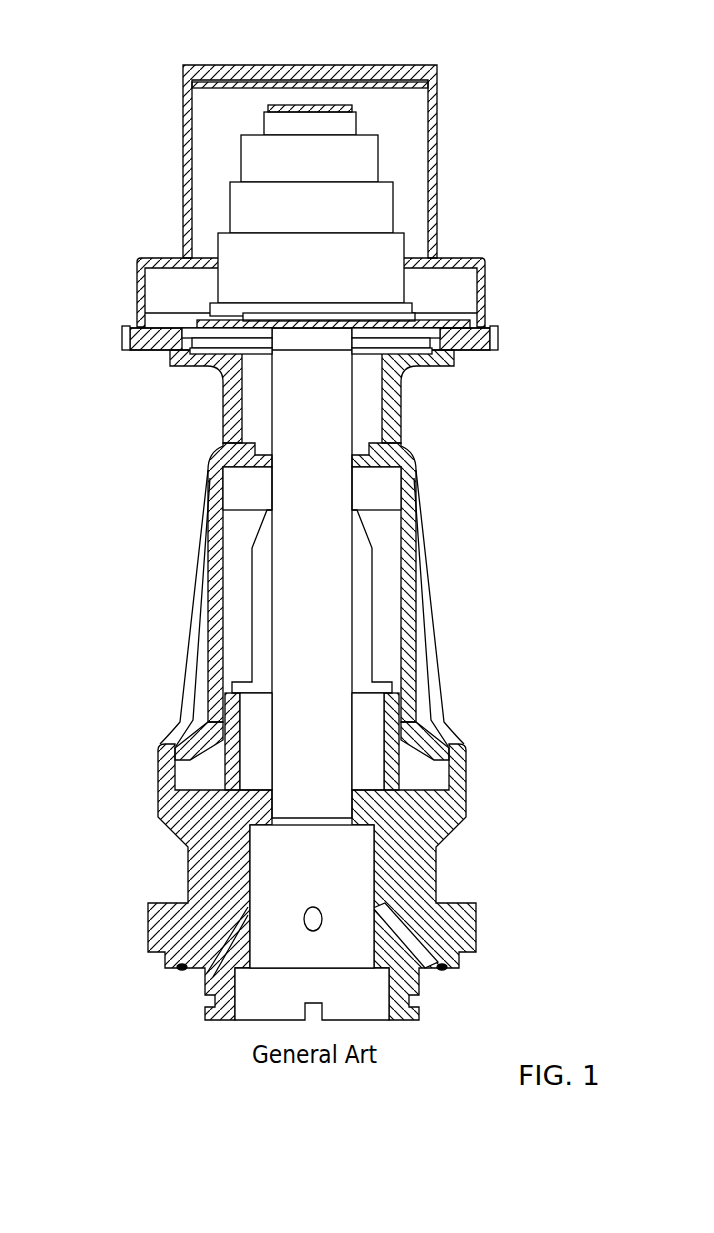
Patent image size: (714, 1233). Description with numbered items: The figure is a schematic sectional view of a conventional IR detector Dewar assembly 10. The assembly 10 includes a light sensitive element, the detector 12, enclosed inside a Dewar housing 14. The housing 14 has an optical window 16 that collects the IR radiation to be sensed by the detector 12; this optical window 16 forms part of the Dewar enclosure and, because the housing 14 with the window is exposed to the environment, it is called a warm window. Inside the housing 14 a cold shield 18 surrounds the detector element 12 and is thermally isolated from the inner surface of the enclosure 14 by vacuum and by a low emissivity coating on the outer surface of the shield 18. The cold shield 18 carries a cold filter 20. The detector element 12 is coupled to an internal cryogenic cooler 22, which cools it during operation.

The detector Dewar assembly 10 is at (124, 62).
The light sensitive element 12 is at (413, 310).
The Dewar housing 14 is at (183, 216).
The optical window 16 is at (383, 73).
The cold shield 18 is at (380, 157).
The cold filter 20 is at (256, 108).
The internal cryogenic cooler 22 is at (322, 333).